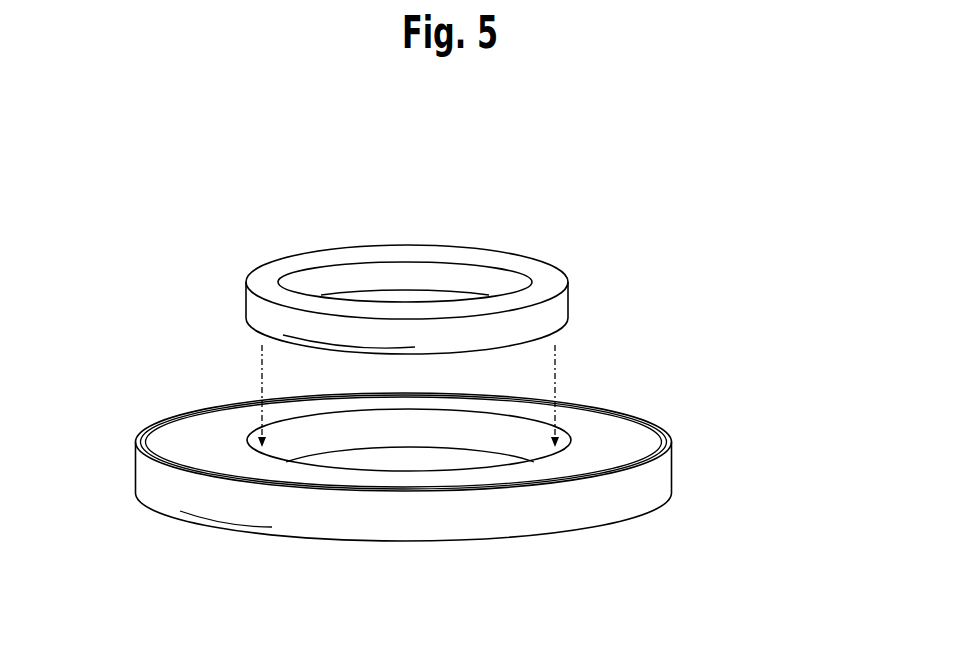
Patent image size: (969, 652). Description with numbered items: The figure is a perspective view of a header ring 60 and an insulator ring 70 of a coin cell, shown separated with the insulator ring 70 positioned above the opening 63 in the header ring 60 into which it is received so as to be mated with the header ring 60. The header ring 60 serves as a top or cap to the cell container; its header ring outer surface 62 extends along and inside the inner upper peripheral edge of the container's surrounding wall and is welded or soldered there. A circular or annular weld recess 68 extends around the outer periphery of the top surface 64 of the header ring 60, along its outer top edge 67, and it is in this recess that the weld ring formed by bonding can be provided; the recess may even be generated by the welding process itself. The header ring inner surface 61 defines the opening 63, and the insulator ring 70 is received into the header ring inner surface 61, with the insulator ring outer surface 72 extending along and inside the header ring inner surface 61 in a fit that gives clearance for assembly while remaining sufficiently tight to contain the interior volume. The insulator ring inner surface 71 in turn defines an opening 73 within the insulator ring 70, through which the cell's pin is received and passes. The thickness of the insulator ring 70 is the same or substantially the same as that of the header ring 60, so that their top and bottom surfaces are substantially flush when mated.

The header ring 60 is at (478, 454).
The header ring inner surface 61 is at (517, 428).
The header ring outer surface 62 is at (665, 468).
The opening 63 is at (407, 455).
The top surface 64 is at (210, 433).
The outer top edge 67 is at (143, 430).
The weld recess 68 is at (637, 420).
The insulator ring 70 is at (341, 226).
The insulator ring inner surface 71 is at (330, 277).
The insulator ring outer surface 72 is at (265, 313).
The opening 73 is at (410, 280).